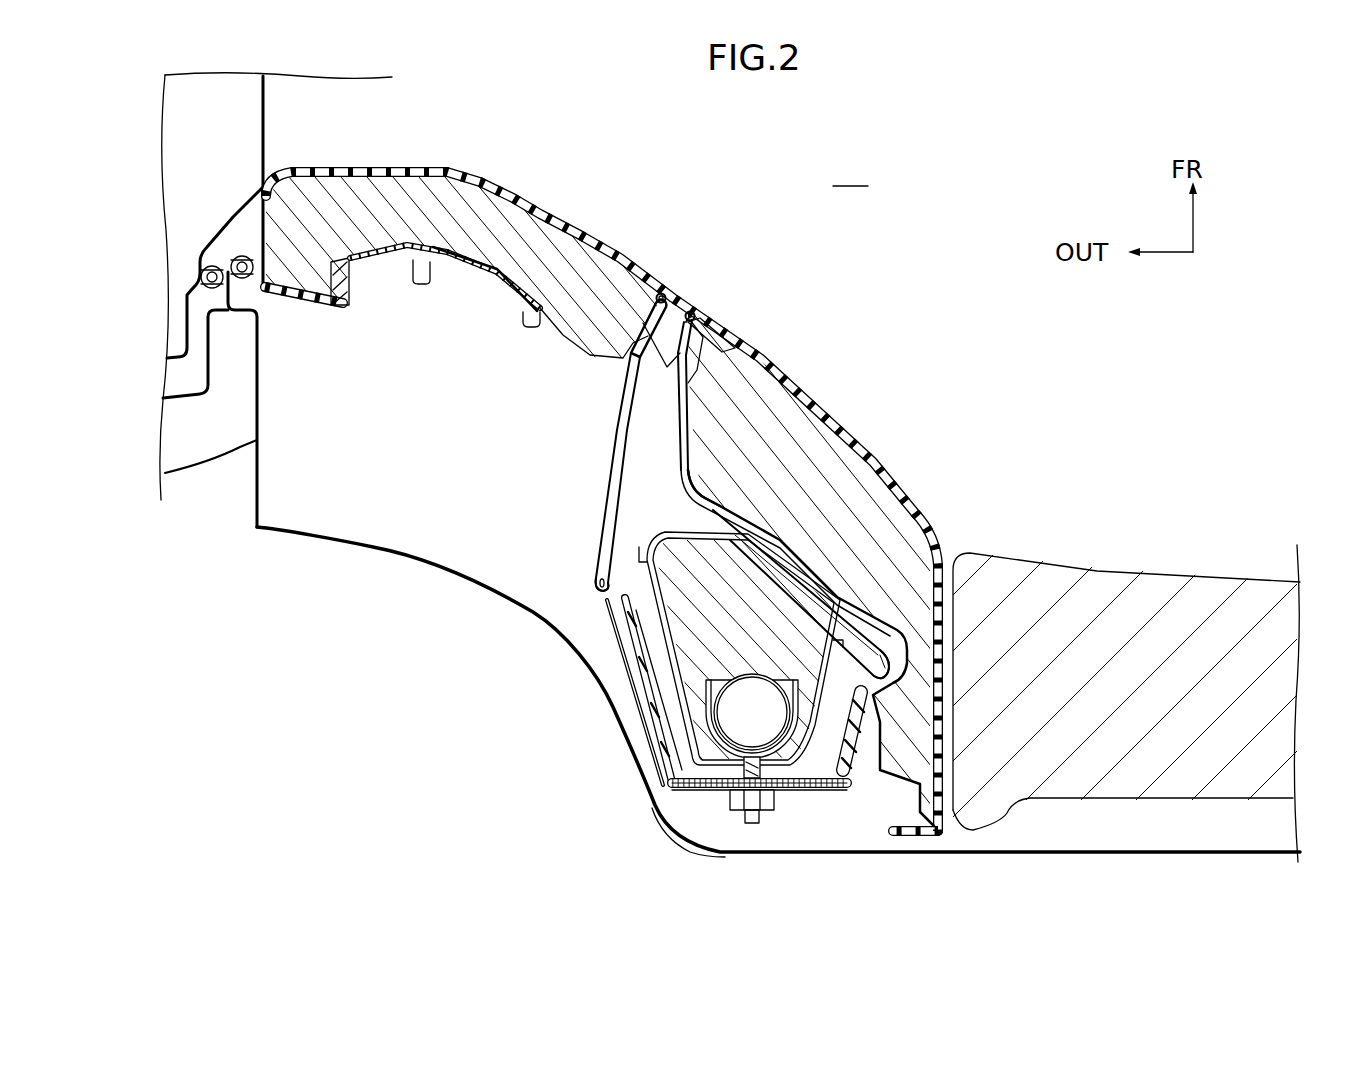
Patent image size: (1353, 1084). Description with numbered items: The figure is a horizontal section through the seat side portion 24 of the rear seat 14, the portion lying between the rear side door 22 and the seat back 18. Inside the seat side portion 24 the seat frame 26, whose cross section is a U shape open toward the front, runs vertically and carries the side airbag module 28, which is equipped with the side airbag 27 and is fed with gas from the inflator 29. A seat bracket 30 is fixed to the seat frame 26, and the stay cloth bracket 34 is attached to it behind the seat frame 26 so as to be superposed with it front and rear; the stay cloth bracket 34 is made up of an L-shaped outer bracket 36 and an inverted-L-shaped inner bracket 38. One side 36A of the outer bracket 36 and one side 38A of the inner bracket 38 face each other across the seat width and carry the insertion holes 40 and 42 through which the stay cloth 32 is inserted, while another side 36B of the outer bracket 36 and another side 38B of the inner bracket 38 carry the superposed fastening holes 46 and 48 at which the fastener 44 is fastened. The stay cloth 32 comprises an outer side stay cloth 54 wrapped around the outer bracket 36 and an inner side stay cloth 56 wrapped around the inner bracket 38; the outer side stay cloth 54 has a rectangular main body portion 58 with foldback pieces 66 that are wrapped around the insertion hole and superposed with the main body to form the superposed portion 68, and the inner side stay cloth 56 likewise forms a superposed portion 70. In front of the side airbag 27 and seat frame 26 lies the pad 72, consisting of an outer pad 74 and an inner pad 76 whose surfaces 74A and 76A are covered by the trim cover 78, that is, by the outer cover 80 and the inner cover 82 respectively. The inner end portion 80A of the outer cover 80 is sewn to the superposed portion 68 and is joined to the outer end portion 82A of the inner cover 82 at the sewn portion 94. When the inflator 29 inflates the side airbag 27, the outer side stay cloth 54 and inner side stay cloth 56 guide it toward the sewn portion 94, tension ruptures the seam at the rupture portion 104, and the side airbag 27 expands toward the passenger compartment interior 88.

The rear seat 14 is at (1007, 675).
The seat back 18 is at (1185, 569).
The rear side door 22 is at (177, 147).
The seat side portion 24 is at (789, 360).
The seat frame 26 is at (645, 700).
The side airbag 27 is at (668, 650).
The side airbag module 28 is at (749, 648).
The inflator 29 is at (672, 780).
The seat bracket 30 is at (823, 792).
The stay cloth 32 is at (763, 515).
The stay cloth bracket 34 is at (731, 780).
The outer bracket 36 is at (679, 751).
The one side of the outer bracket 36A is at (640, 674).
The another side of the outer bracket 36B is at (707, 795).
The inner bracket 38 is at (812, 827).
The one side of the inner bracket 38A is at (870, 735).
The another side of the inner bracket 38B is at (810, 790).
The insertion hole 40 is at (648, 623).
The insertion hole 42 is at (930, 680).
The fastener 44 is at (768, 805).
The fastening hole 46 is at (747, 822).
The fastening hole 48 is at (753, 825).
The outer side stay cloth 54 is at (605, 520).
The inner side stay cloth 56 is at (880, 625).
The main body portion 58 is at (840, 565).
The foldback pieces 66 is at (698, 497).
The superposed portion 68 is at (632, 336).
The superposed portion 70 is at (687, 367).
The pad 72 is at (729, 471).
The outer pad 74 is at (468, 237).
The surface of the outer pad 74A is at (517, 193).
The inner pad 76 is at (804, 562).
The surface of the inner pad 76A is at (800, 388).
The trim cover 78 is at (701, 325).
The outer cover 80 is at (627, 306).
The inner end portion of the outer cover 80A is at (650, 368).
The inner cover 82 is at (707, 351).
The outer end portion of the inner cover 82A is at (681, 373).
The passenger compartment interior 88 is at (850, 172).
The sewn portion 94 is at (697, 310).
The rupture portion 104 is at (663, 293).